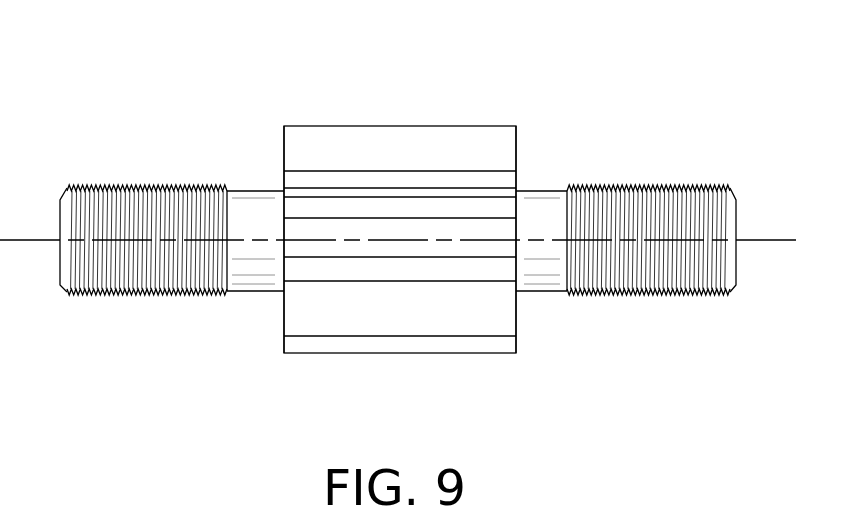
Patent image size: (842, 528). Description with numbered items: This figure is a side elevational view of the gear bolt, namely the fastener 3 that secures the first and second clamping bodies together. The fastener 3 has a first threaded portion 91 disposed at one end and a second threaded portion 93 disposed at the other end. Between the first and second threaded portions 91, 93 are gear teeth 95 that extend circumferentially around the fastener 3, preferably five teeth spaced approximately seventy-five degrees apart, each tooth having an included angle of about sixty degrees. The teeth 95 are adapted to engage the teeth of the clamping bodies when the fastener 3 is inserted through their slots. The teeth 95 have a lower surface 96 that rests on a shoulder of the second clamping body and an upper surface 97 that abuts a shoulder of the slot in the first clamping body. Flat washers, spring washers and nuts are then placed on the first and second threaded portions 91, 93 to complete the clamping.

The fastener 3 is at (387, 127).
The first threaded portion 91 is at (130, 188).
The second threaded portion 93 is at (674, 187).
The gear teeth 95 is at (323, 257).
The lower surface 96 is at (517, 143).
The upper surface 97 is at (283, 142).